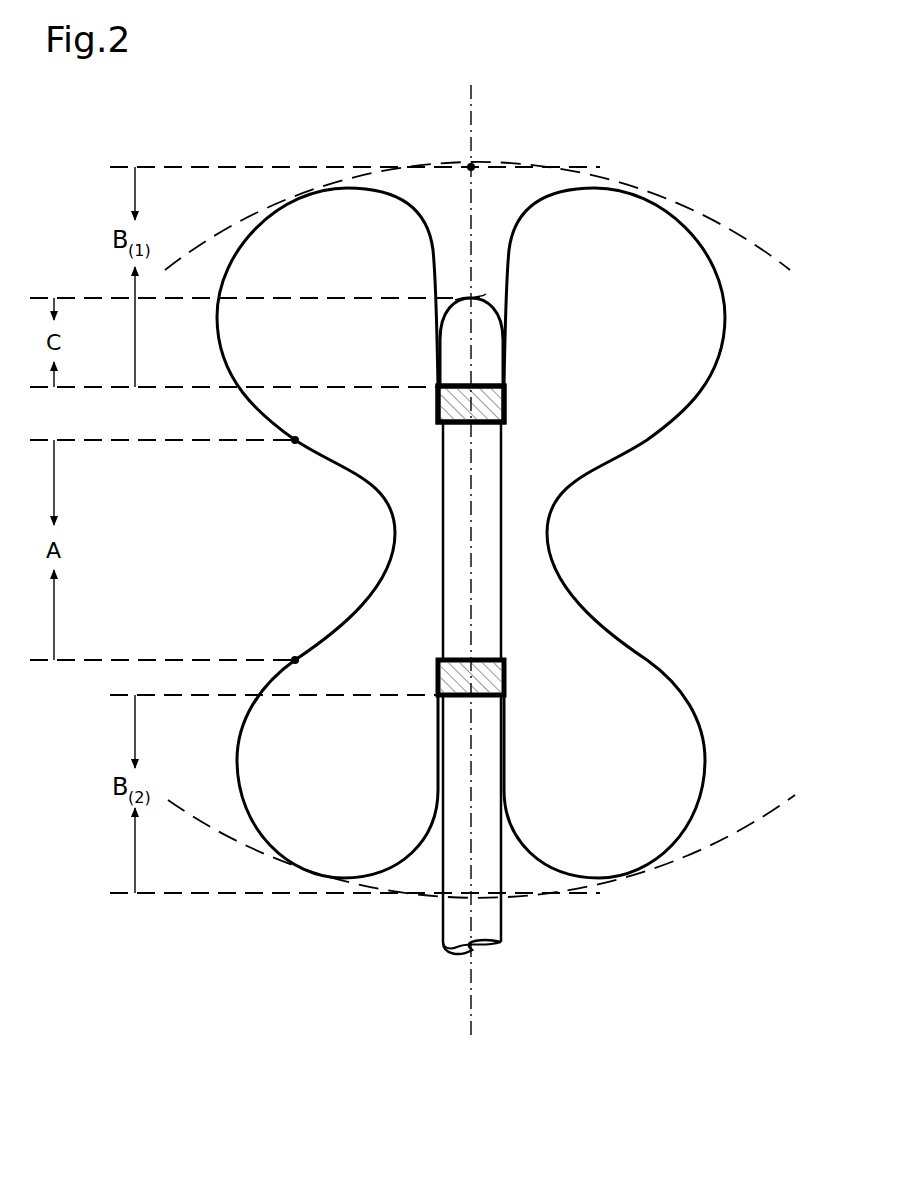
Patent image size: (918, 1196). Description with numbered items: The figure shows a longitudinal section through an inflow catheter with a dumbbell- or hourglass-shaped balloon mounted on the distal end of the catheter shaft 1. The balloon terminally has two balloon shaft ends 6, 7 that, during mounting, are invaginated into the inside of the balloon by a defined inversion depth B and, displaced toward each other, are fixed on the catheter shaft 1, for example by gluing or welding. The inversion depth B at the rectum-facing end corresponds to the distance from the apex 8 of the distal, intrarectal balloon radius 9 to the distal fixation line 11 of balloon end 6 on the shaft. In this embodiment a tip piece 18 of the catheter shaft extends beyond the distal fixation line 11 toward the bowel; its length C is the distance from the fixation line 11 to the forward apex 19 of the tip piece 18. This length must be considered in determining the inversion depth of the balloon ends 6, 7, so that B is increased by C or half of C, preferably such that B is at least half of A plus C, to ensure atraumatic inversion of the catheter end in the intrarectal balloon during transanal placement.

The catheter shaft 1 is at (480, 927).
The balloon shaft end 6 is at (480, 408).
The balloon shaft end 7 is at (480, 672).
The apex 8 is at (471, 167).
The distal intrarectal balloon radius 9 is at (690, 212).
The distal fixation line 11 is at (505, 386).
The tip piece 18 is at (480, 350).
The forward apex 19 is at (471, 298).